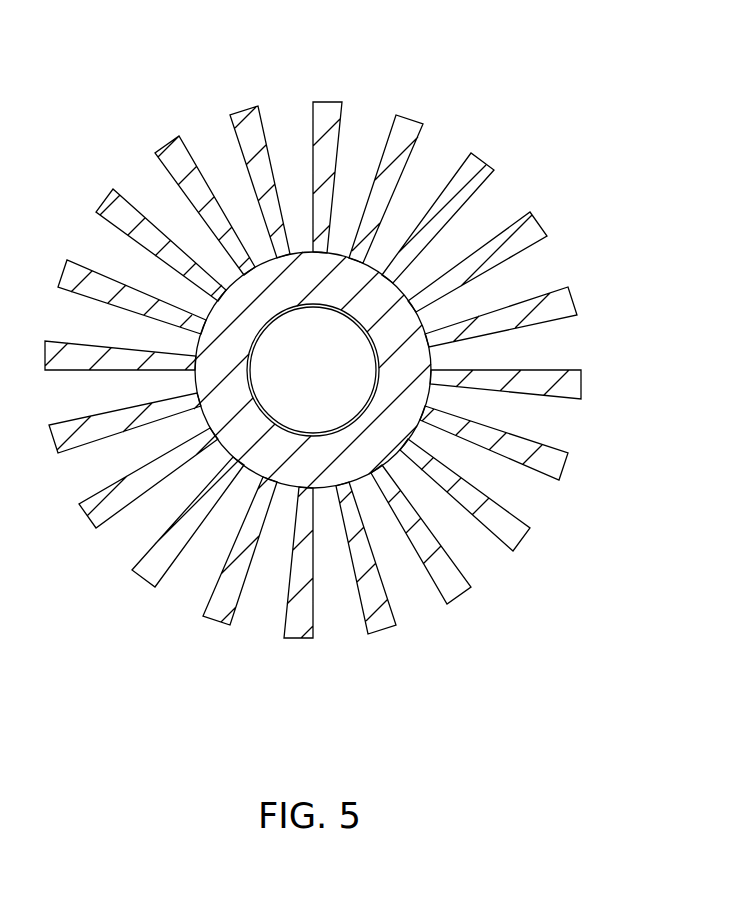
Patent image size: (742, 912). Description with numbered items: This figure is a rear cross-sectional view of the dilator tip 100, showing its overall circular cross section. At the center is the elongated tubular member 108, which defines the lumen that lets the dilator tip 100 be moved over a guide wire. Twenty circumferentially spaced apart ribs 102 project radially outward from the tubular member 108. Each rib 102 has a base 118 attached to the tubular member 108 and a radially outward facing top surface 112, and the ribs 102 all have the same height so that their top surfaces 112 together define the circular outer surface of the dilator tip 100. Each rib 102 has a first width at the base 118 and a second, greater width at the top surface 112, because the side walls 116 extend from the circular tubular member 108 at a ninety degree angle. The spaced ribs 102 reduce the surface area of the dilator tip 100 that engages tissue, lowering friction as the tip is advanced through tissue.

The dilator tip 100 is at (613, 105).
The ribs 102 is at (167, 145).
The elongated tubular member 108 is at (463, 339).
The top surface 112 is at (326, 100).
The side walls 116 is at (448, 182).
The base 118 is at (430, 347).